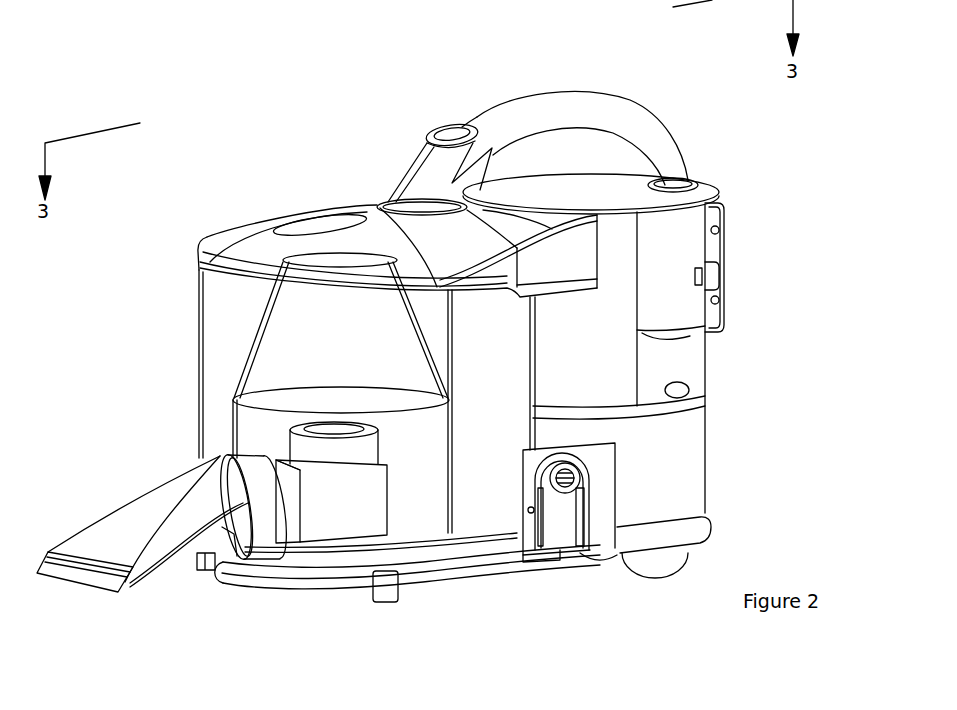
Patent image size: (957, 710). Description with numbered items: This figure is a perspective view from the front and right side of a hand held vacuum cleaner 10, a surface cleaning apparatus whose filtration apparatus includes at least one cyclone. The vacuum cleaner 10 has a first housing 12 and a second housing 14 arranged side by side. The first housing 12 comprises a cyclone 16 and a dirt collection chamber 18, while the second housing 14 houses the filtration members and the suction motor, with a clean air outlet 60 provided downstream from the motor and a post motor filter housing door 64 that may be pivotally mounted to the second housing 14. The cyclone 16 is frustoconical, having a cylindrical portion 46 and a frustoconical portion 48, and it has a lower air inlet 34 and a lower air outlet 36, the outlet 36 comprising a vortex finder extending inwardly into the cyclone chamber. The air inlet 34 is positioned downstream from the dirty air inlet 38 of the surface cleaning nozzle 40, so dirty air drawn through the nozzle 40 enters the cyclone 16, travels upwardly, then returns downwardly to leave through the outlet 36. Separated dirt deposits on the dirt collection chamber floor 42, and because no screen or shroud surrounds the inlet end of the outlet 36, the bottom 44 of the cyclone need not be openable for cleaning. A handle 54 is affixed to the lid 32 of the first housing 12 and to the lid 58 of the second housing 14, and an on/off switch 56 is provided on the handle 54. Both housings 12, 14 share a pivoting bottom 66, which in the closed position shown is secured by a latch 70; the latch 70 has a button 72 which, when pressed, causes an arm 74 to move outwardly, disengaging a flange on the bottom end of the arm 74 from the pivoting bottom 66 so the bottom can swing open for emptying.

The vacuum cleaner 10 is at (758, 138).
The first housing 12 is at (197, 312).
The second housing 14 is at (706, 369).
The cyclone 16 is at (240, 366).
The dirt collection chamber 18 is at (230, 330).
The lid 32 is at (222, 240).
The air inlet 34 is at (357, 520).
The air outlet 36 is at (350, 447).
The dirty air inlet 38 is at (126, 585).
The surface cleaning nozzle 40 is at (80, 537).
The dirt collection chamber floor 42 is at (457, 538).
The bottom 44 is at (417, 534).
The cylindrical portion 46 is at (230, 426).
The frustoconical portion 48 is at (197, 282).
The handle 54 is at (545, 100).
The on/off switch 56 is at (446, 126).
The lid 58 is at (698, 190).
The clean air outlet 60 is at (722, 228).
The post motor filter housing door 64 is at (722, 262).
The pivoting bottom 66 is at (273, 588).
The latch 70 is at (563, 507).
The button 72 is at (583, 463).
The arm 74 is at (563, 534).